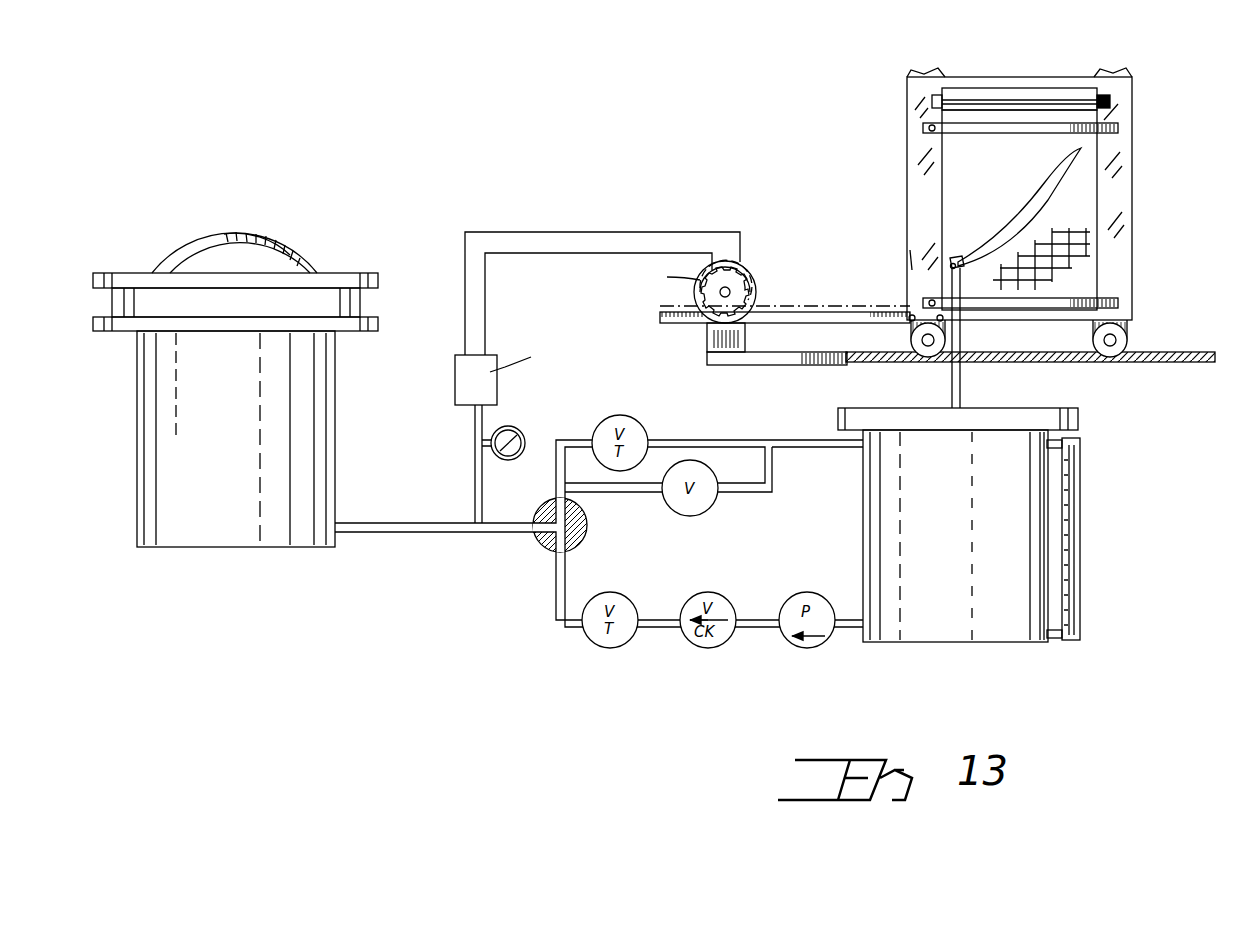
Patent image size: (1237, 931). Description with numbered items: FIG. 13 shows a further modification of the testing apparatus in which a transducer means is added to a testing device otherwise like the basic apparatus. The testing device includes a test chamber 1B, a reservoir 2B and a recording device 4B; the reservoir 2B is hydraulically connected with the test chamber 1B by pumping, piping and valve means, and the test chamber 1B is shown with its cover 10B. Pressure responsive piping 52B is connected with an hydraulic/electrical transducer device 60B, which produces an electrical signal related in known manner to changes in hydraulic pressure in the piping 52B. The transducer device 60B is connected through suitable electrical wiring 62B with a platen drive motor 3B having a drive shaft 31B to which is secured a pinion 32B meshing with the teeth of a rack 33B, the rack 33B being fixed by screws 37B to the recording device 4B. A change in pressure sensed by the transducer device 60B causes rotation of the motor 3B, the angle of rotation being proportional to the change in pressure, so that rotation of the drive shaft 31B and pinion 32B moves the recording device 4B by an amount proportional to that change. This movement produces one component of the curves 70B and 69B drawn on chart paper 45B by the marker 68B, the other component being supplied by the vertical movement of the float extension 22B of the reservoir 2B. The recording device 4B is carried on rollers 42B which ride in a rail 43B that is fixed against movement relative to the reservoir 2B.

The test chamber 1B is at (278, 530).
The dome cover 10B is at (250, 238).
The electrical wiring 62B is at (530, 252).
The hydraulic/electrical transducer device 60B is at (497, 399).
The drive shaft 31B is at (723, 290).
The pinion 32B is at (735, 306).
The platen drive motor 3B is at (748, 270).
The rack 33B is at (825, 320).
The rail 43B is at (815, 362).
The rollers 42B is at (1125, 351).
The recording device 4B is at (924, 152).
The chart paper 45B is at (1080, 168).
The curve 70B is at (1052, 178).
The curve 69B is at (1043, 200).
The marker 68B is at (912, 264).
The screws 37B is at (906, 328).
The float extension 22B is at (950, 375).
The reservoir 2B is at (955, 628).
The pressure responsive piping 52B is at (482, 493).